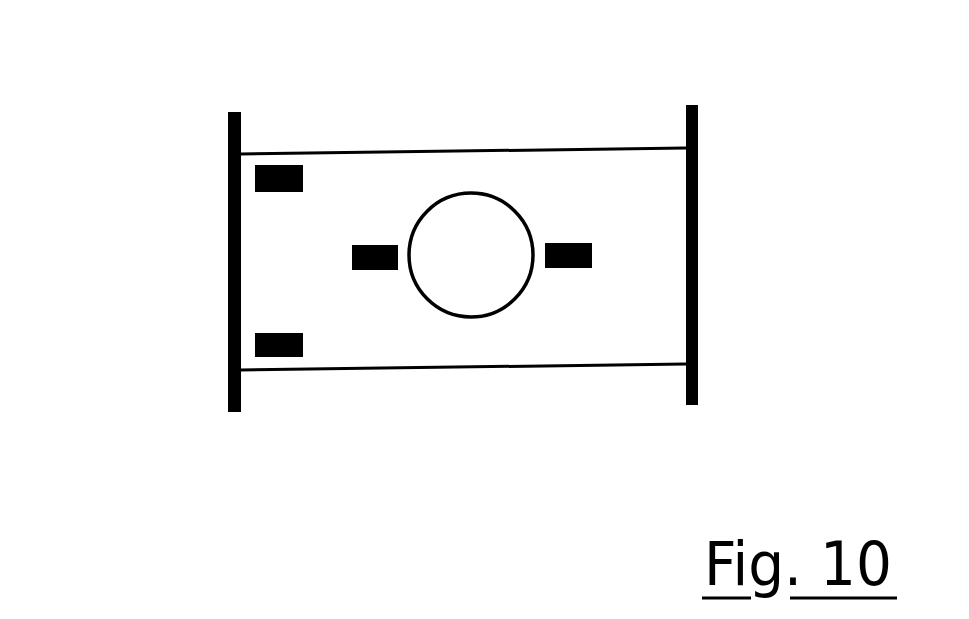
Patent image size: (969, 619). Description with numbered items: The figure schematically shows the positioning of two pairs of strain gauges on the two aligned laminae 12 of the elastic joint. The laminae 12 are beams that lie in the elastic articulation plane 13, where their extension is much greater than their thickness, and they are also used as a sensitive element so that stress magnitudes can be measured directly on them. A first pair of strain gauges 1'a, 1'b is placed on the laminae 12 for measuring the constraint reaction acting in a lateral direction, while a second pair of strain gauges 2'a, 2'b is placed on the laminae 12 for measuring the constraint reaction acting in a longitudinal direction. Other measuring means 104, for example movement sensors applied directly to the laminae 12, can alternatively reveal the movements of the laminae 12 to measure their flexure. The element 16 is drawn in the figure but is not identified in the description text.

The measuring means 104 is at (207, 361).
The guide rail 16 is at (687, 106).
The laminae 12 is at (463, 188).
The elastic articulation plane 13 is at (628, 322).
The strain gauge 1'a is at (305, 119).
The strain gauge 1'b is at (318, 388).
The strain gauge 2'a is at (398, 376).
The strain gauge 2'b is at (562, 373).